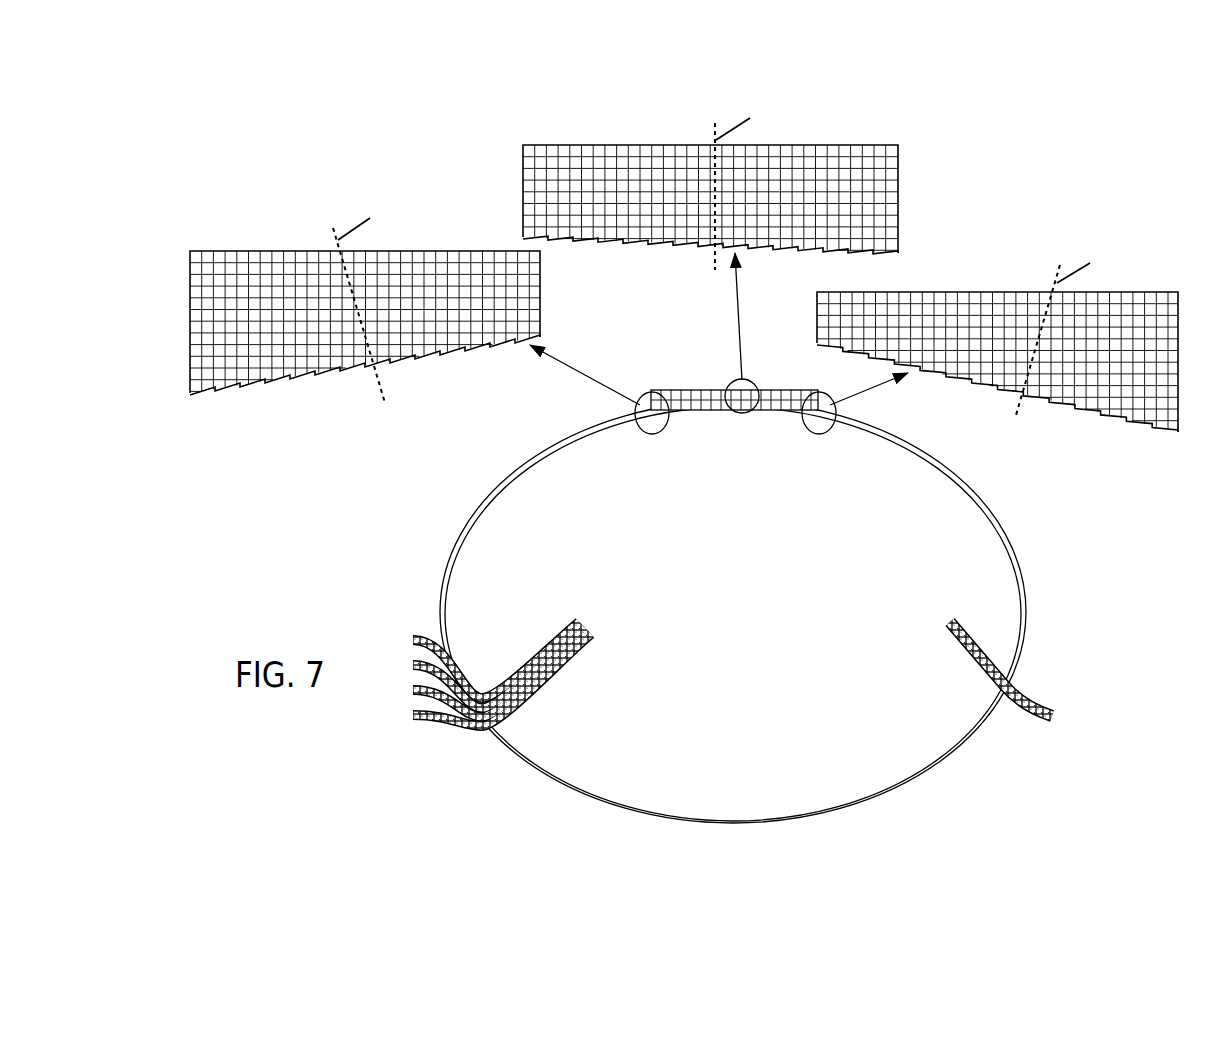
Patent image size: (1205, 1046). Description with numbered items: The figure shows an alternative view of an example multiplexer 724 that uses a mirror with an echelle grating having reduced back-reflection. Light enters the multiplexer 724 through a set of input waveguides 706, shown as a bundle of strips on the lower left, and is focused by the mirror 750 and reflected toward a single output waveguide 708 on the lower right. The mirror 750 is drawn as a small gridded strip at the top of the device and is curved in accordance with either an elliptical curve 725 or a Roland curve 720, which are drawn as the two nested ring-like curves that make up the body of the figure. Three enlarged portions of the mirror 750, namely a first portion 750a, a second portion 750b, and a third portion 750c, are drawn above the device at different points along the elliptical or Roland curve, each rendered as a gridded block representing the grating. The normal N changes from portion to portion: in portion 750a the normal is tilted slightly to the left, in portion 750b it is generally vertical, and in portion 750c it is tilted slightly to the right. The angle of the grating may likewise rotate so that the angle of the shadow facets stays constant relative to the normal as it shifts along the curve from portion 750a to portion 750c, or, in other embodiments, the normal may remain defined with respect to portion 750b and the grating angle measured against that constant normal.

The multiplexer 724 is at (440, 152).
The first portion of the mirror 750a is at (305, 400).
The second portion of the mirror 750b is at (630, 263).
The third portion of the mirror 750c is at (1097, 440).
The mirror 750 is at (755, 428).
The elliptical curve 725 is at (462, 538).
The Roland curve 720 is at (993, 533).
The waveguides 706 is at (490, 700).
The waveguide 708 is at (1048, 680).